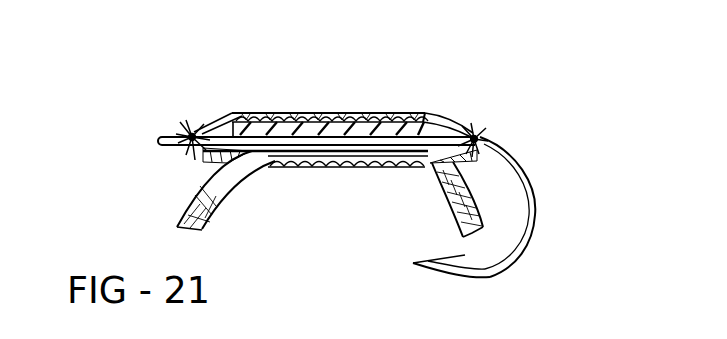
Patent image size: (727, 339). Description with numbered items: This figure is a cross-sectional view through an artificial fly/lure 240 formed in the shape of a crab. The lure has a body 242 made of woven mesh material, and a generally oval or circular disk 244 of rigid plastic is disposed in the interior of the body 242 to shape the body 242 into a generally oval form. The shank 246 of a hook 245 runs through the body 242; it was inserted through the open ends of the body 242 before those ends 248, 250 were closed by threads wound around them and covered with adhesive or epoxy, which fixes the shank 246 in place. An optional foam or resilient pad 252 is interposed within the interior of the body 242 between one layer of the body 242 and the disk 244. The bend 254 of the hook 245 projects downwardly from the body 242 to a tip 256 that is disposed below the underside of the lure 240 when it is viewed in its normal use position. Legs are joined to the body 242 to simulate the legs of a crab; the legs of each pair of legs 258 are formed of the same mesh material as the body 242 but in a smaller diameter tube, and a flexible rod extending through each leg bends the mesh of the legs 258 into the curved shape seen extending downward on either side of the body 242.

The artificial fly/lure 240 is at (457, 30).
The body 242 is at (267, 112).
The disk 244 is at (432, 116).
The hook 245 is at (535, 198).
The shank 246 is at (219, 136).
The end 248 is at (189, 133).
The end 250 is at (481, 133).
The foam or resilient pad 252 is at (346, 118).
The bend 254 is at (529, 238).
The tip 256 is at (462, 256).
The pair of legs 258 is at (191, 212).